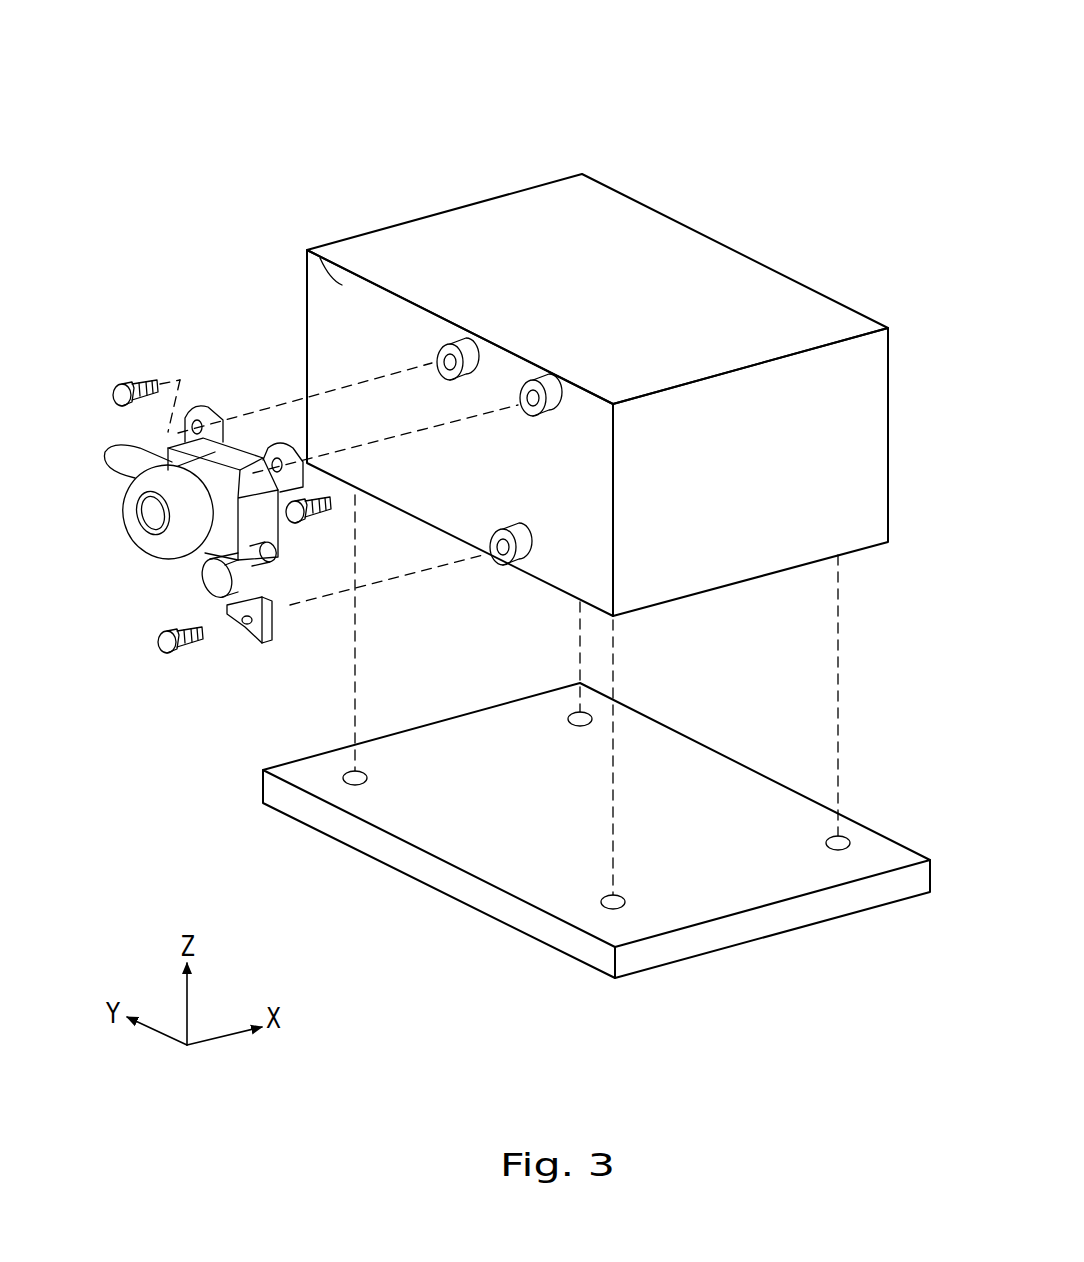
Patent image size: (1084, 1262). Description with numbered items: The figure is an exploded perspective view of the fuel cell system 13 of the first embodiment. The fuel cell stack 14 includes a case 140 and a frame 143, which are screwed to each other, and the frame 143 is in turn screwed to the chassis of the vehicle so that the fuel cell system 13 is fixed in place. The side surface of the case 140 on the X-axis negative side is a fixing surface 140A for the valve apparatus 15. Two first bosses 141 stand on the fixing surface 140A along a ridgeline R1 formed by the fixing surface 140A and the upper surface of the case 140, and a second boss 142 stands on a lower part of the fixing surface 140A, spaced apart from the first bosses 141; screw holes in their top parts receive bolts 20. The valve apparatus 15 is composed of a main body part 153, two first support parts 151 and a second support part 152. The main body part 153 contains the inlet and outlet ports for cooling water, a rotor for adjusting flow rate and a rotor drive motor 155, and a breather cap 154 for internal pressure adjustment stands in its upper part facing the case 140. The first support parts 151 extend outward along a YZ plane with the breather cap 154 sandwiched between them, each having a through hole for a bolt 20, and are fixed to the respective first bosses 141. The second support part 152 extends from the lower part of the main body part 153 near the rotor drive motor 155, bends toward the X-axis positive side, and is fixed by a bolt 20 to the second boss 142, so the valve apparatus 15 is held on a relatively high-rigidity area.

The fuel cell system 13 is at (300, 85).
The fuel cell stack 14 is at (913, 650).
The case 140 is at (850, 555).
The fixing surface 140A is at (342, 315).
The ridgeline R1 is at (342, 288).
The first bosses 141 is at (420, 348).
The second boss 142 is at (495, 565).
The frame 143 is at (858, 822).
The valve apparatus 15 is at (97, 503).
The first support parts 151 is at (200, 405).
The second support part 152 is at (258, 640).
The main body part 153 is at (145, 540).
The breather cap 154 is at (255, 420).
The rotor drive motor 155 is at (200, 582).
The bolts 20 is at (120, 385).